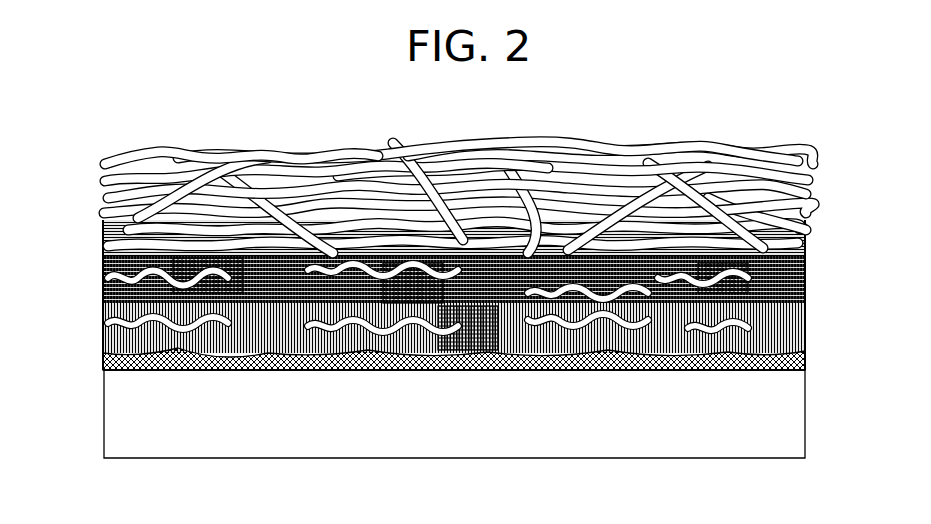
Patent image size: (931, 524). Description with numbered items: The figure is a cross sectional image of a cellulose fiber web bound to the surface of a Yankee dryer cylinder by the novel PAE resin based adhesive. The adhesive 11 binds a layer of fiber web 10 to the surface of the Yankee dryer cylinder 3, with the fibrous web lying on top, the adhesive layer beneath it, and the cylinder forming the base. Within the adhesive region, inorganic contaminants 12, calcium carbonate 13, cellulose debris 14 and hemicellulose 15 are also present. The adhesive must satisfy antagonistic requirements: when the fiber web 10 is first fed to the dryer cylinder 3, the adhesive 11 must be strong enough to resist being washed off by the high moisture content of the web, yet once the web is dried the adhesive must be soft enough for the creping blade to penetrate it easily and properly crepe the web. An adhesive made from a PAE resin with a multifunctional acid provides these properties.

The Yankee dryer cylinder 3 is at (385, 430).
The fiber web 10 is at (205, 188).
The adhesive 11 is at (777, 300).
The inorganic contaminants 12 is at (765, 277).
The calcium carbonate 13 is at (748, 363).
The cellulose debris 14 is at (115, 266).
The hemicellulose 15 is at (203, 335).